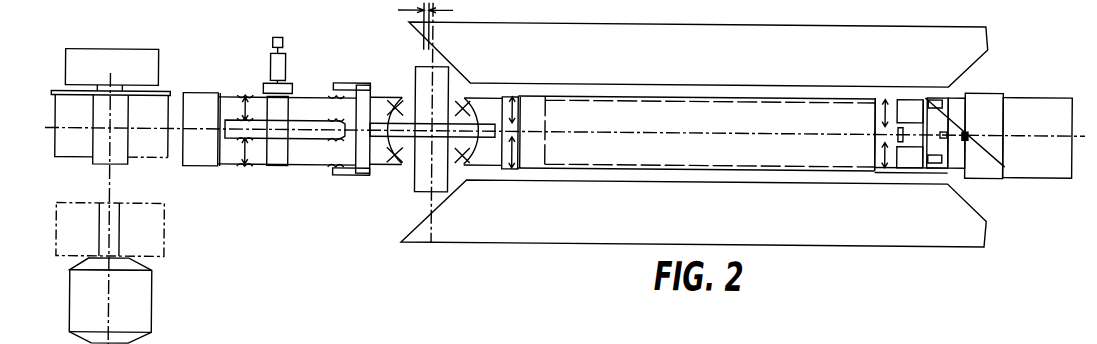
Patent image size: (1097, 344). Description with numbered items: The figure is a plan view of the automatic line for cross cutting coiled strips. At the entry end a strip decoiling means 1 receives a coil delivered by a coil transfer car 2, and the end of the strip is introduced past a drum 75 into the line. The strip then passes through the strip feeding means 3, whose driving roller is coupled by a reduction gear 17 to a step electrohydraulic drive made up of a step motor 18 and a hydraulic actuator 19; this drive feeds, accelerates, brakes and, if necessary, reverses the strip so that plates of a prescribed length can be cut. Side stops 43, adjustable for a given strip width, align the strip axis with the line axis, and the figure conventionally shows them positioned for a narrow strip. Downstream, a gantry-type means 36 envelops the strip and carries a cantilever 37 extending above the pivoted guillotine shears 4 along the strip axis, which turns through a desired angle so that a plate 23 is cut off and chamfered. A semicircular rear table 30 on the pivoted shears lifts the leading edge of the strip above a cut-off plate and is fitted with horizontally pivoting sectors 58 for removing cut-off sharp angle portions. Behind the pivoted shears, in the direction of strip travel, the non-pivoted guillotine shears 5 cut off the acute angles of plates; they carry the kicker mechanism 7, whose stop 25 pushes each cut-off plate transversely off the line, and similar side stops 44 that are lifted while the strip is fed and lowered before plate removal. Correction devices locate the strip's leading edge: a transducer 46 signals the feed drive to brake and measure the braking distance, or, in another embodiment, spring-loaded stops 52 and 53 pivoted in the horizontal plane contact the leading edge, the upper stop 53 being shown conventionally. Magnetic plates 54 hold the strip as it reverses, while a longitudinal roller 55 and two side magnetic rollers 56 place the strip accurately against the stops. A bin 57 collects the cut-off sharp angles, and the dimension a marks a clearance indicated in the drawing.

The strip decoiling means 1 is at (143, 65).
The coil transfer car 2 is at (137, 307).
The strip feeding means 3 is at (278, 166).
The pivoted guillotine shears 4 is at (440, 73).
The non-pivoted guillotine shears 5 is at (985, 130).
The kicker mechanism 7 is at (883, 93).
The reduction gear 17 is at (289, 87).
The step motor 18 is at (282, 41).
The hydraulic actuator 19 is at (267, 60).
The plate 23 is at (858, 233).
The stop 25 is at (511, 168).
The semicircular rear table 30 is at (401, 150).
The gantry-type means 36 is at (356, 176).
The cantilever 37 is at (400, 94).
The side stops 43 is at (242, 95).
The side stops 44 is at (937, 160).
The transducer 46 is at (978, 145).
The spring-loaded stop 52 is at (975, 132).
The spring-loaded stop 53 is at (950, 105).
The magnetic plates 54 is at (905, 150).
The longitudinal roller 55 is at (883, 120).
The side magnetic rollers 56 is at (952, 163).
The bin 57 is at (1050, 95).
The sectors 58 is at (410, 165).
The drum 75 is at (195, 99).
The axial clearance a is at (426, 25).